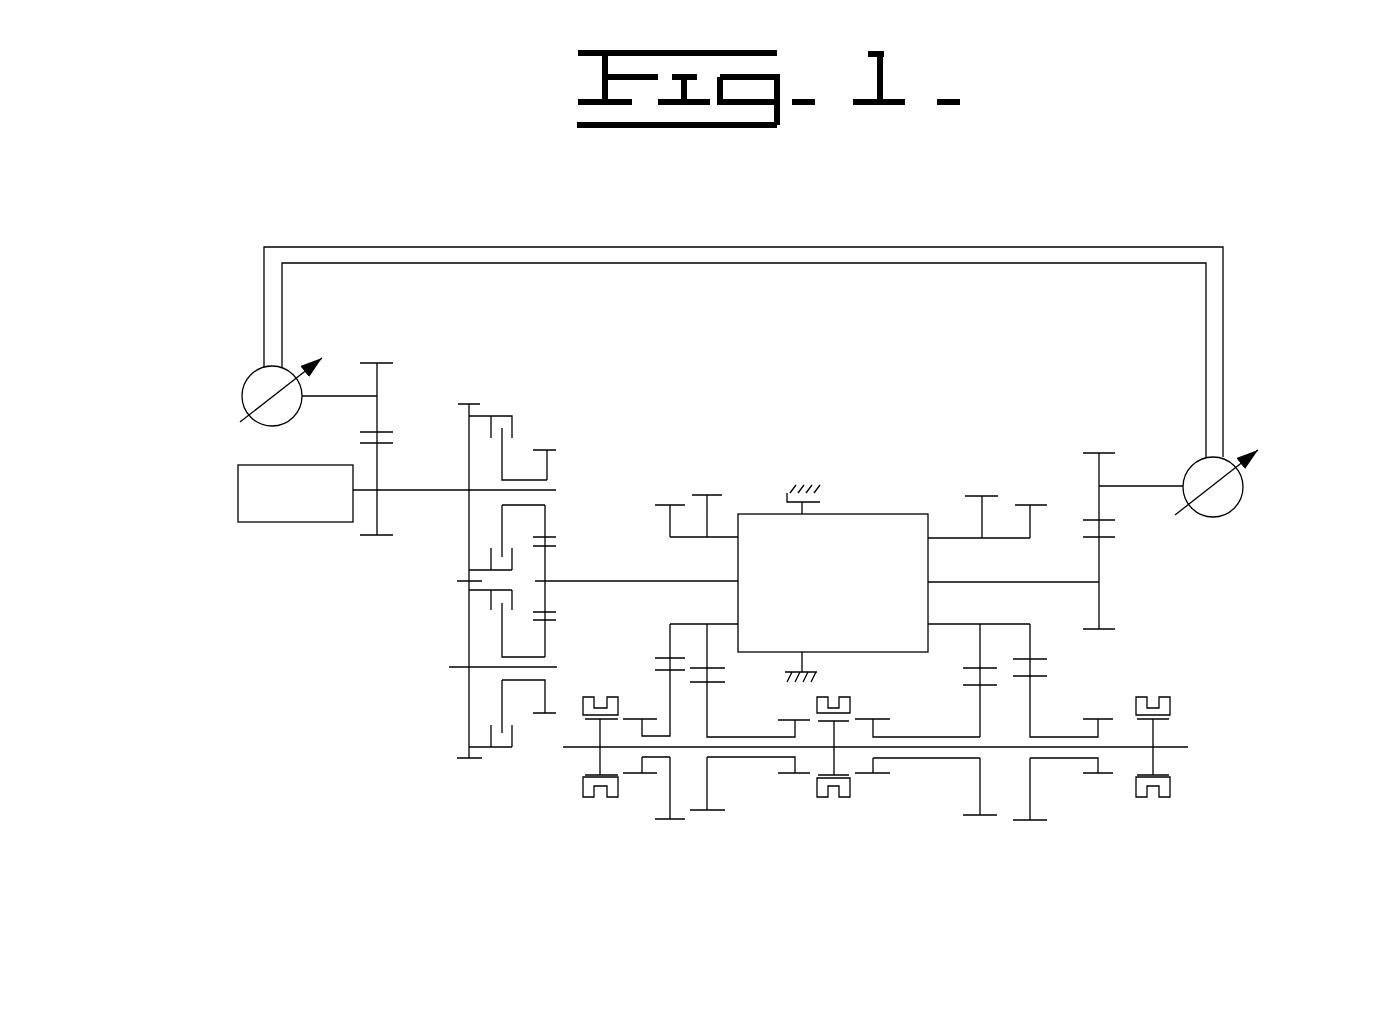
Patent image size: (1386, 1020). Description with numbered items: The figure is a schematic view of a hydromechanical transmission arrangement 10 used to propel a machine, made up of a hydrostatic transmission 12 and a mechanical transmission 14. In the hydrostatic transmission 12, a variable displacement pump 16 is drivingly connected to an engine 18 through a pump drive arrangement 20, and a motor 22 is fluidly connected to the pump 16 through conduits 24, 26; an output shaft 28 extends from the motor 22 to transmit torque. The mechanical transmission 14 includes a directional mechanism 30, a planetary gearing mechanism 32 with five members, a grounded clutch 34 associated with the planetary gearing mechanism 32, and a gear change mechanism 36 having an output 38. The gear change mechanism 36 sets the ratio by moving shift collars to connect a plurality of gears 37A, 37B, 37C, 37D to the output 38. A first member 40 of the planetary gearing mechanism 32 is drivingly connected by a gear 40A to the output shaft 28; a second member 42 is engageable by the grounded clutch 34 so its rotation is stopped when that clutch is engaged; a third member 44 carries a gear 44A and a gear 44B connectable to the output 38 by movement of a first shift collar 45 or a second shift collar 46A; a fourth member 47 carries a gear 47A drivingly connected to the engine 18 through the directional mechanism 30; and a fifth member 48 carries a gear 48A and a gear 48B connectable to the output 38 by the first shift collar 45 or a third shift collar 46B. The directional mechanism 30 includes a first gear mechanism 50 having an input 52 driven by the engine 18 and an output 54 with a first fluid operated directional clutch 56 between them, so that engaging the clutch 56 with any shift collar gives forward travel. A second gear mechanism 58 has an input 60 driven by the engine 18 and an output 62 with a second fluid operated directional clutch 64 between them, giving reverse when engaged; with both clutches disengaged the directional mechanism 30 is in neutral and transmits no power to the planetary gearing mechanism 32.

The hydromechanical transmission arrangement 10 is at (1148, 207).
The hydrostatic transmission 12 is at (1277, 283).
The mechanical transmission 14 is at (1262, 593).
The variable displacement pump 16 is at (243, 384).
The engine 18 is at (250, 522).
The pump drive arrangement 20 is at (345, 562).
The motor 22 is at (1243, 490).
The conduit 24 is at (740, 263).
The conduit 26 is at (695, 247).
The output shaft 28 is at (1158, 486).
The directional mechanism 30 is at (588, 430).
The planetary gearing mechanism 32 is at (748, 492).
The grounded clutch 34 is at (820, 499).
The gear change mechanism 36 is at (745, 835).
The gear 37A is at (707, 800).
The gear 37B is at (980, 802).
The gear 37C is at (670, 797).
The gear 37D is at (1030, 797).
The output 38 is at (1188, 747).
The first member 40 is at (1020, 582).
The gear 40A is at (1099, 577).
The second member 42 is at (802, 508).
The third member 44 is at (684, 624).
The gear 44A is at (712, 657).
The gear 44B is at (670, 640).
The first shift collar 45 is at (845, 697).
The second shift collar 46A is at (591, 697).
The third shift collar 46B is at (1160, 697).
The fourth member 47 is at (583, 581).
The gear 47A is at (548, 560).
The fifth member 48 is at (1015, 624).
The gear 48A is at (975, 666).
The gear 48B is at (1030, 643).
The first gear mechanism 50 is at (540, 405).
The input 52 is at (469, 456).
The output 54 is at (547, 478).
The first fluid operated directional clutch 56 is at (492, 416).
The second gear mechanism 58 is at (437, 765).
The input 60 is at (469, 636).
The output 62 is at (545, 650).
The second fluid operated directional clutch 64 is at (502, 747).